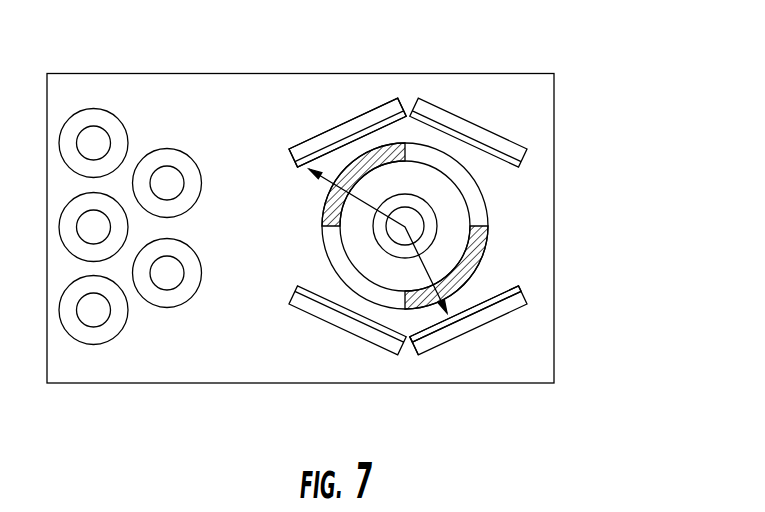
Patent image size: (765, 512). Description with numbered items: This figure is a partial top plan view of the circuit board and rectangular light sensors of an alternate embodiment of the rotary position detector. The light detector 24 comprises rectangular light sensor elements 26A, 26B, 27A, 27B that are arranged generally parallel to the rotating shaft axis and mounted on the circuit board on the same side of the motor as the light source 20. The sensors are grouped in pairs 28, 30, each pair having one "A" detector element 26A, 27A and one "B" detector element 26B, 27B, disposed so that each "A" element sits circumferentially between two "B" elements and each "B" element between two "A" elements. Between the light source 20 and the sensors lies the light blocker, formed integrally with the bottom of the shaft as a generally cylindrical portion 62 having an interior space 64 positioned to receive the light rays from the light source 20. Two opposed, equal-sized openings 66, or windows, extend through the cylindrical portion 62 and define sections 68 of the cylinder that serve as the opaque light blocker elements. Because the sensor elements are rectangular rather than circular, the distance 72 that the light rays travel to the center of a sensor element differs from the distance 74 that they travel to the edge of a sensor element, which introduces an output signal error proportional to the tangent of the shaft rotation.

The light source 20 is at (410, 221).
The light detector 24 is at (482, 333).
The "A" detector element 26A is at (492, 312).
The "B" detector element 26B is at (365, 332).
The "A" detector element 27A is at (313, 143).
The "B" detector element 27B is at (452, 113).
The pair of segmented light sensors 28 is at (437, 357).
The pair of segmented light sensors 30 is at (339, 113).
The cylindrical portion 62 is at (333, 277).
The interior space 64 is at (388, 179).
The openings 66 is at (473, 193).
The sections 68 is at (483, 255).
The distance to center of light sensor element 72 is at (425, 264).
The distance to edge of light sensor element 74 is at (328, 222).